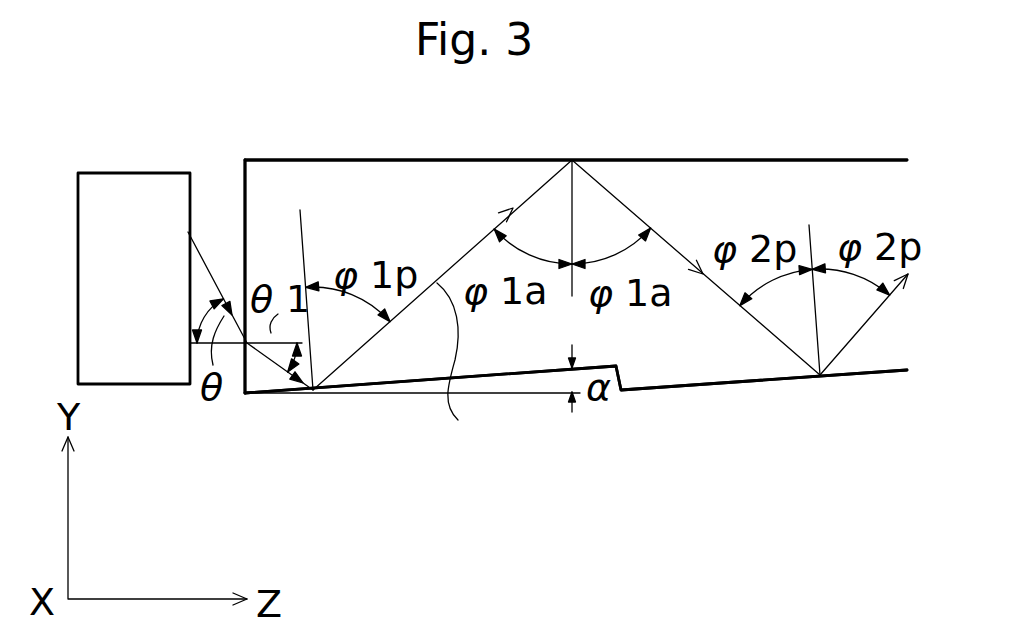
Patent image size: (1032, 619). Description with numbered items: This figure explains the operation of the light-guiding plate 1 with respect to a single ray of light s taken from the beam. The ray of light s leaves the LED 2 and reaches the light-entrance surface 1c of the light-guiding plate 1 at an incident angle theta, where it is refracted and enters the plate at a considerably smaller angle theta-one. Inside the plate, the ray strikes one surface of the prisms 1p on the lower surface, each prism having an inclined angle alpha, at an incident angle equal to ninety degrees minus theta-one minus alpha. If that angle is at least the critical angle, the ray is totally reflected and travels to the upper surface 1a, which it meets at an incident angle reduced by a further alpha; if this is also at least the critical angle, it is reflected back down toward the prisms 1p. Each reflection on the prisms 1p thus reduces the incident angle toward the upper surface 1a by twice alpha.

The light-guiding plate 1 is at (402, 240).
The upper surface 1a is at (722, 160).
The light-entrance surface 1c is at (245, 197).
The prisms 1p is at (715, 384).
The LED 2 is at (135, 385).
The ray of light s is at (453, 368).